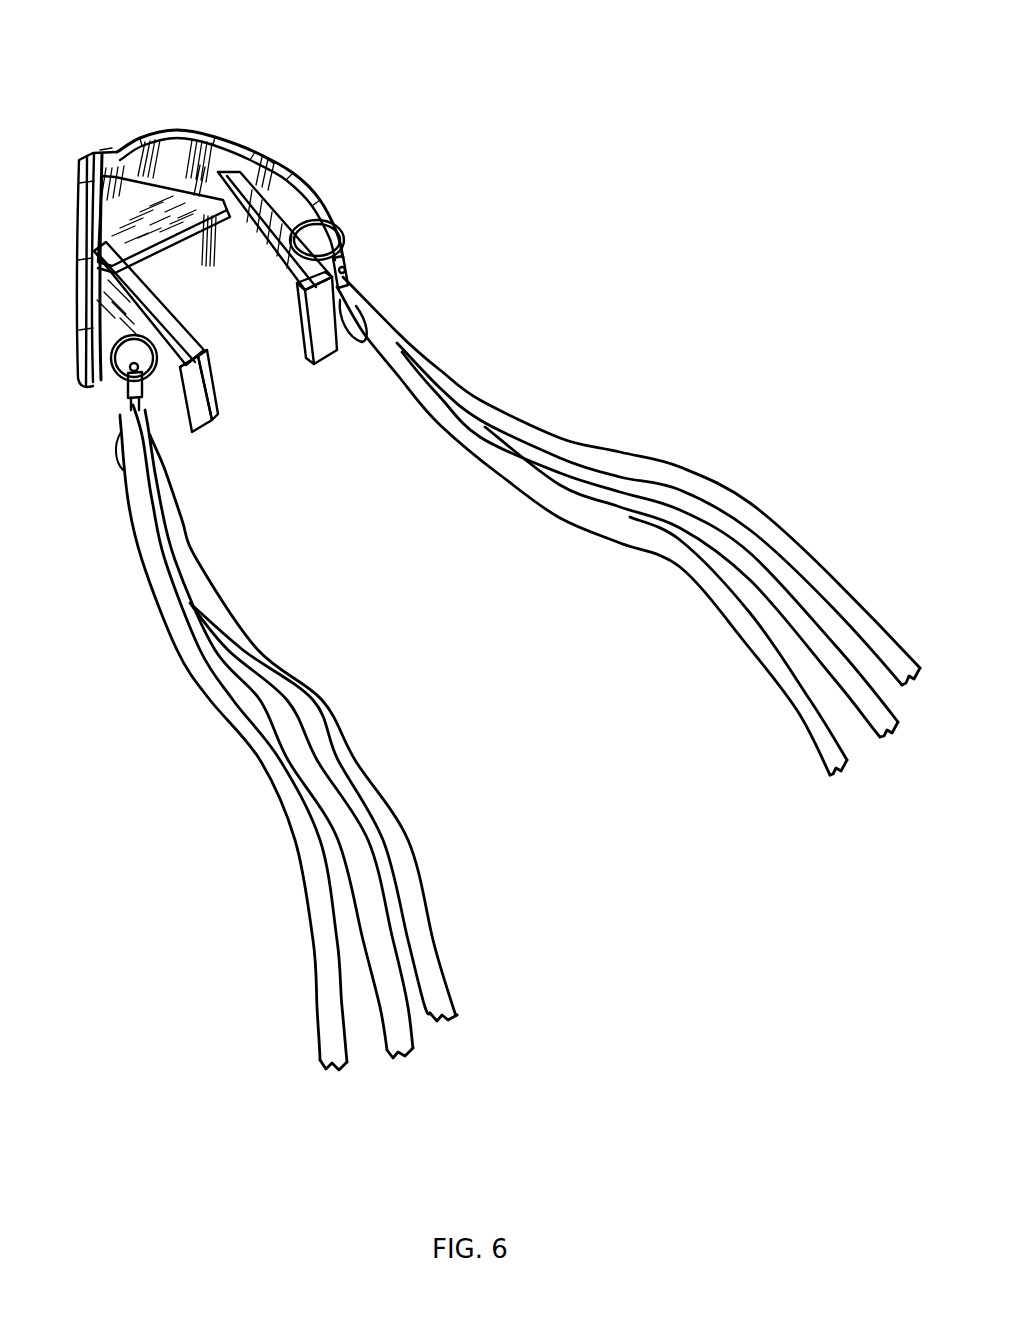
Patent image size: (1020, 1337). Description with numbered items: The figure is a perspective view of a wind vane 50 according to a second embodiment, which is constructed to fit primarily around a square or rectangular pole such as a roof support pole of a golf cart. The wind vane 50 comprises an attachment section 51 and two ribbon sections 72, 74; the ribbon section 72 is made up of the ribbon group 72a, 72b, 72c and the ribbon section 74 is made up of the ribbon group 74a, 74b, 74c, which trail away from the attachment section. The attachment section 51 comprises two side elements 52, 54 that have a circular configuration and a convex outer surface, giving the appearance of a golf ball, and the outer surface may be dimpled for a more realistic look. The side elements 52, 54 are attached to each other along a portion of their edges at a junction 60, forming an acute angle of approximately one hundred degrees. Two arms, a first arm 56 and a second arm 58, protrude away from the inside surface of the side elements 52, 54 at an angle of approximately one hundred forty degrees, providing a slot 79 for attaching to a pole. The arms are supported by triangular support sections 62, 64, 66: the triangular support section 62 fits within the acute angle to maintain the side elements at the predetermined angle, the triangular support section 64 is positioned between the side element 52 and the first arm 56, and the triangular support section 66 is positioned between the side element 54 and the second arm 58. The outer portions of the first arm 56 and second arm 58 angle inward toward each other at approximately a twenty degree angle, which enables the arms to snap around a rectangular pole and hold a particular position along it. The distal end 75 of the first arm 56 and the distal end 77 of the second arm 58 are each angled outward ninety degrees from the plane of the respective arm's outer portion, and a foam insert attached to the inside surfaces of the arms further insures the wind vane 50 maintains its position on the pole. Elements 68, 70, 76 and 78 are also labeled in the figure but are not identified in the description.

The wind vane 50 is at (271, 220).
The attachment section 51 is at (262, 140).
The side element 52 is at (210, 137).
The side element 54 is at (80, 170).
The first arm 56 is at (262, 205).
The second arm 58 is at (125, 278).
The junction 60 is at (115, 155).
The triangular support section 62 is at (135, 195).
The triangular support section 64 is at (312, 215).
The triangular support section 66 is at (152, 336).
The upper ring 68 is at (343, 240).
The lower block 70 is at (162, 325).
The ribbon section 72 is at (628, 543).
The ribbon 72a is at (820, 747).
The ribbon 72b is at (837, 673).
The ribbon 72c is at (870, 637).
The ribbon section 74 is at (325, 746).
The ribbon 74a is at (323, 1020).
The ribbon 74b is at (390, 1018).
The ribbon 74c is at (430, 967).
The distal end of first arm 75 is at (188, 357).
The fitting 76 is at (340, 270).
The distal end of second arm 77 is at (338, 262).
The connector 78 is at (125, 390).
The slot 79 is at (233, 343).